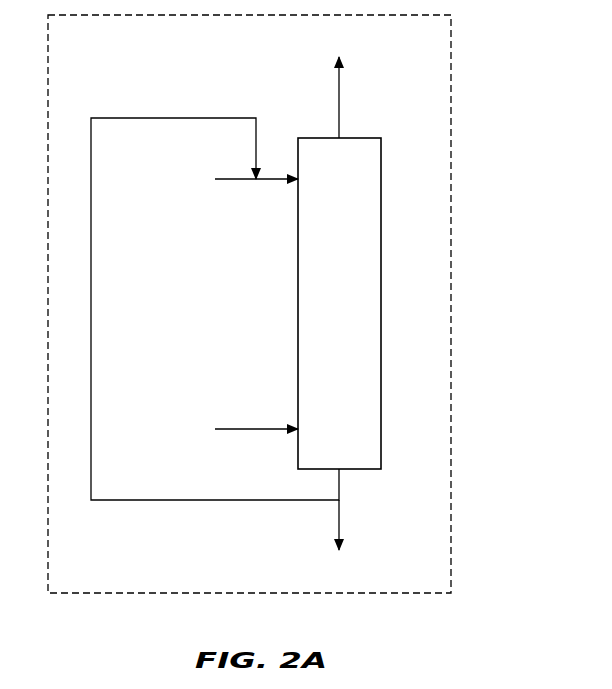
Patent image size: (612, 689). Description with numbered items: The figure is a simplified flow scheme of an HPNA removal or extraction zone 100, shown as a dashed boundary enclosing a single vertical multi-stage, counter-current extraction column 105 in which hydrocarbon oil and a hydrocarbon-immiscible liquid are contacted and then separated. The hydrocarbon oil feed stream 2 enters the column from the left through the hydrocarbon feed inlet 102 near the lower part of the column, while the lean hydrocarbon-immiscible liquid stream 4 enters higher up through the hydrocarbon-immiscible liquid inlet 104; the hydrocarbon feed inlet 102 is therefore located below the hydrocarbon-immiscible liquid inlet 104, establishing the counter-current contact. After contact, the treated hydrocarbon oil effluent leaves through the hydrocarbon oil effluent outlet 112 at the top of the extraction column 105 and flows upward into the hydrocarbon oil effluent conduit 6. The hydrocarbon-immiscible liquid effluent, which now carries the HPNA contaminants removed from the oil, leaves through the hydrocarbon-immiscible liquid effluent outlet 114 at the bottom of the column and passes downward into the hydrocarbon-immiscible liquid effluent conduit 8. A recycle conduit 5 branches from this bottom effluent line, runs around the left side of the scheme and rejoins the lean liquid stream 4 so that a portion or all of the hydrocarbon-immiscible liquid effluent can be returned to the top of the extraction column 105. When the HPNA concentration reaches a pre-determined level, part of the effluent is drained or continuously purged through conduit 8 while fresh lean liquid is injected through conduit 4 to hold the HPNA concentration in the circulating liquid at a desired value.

The HPNA removal or extraction zone 100 is at (275, 297).
The extraction column 105 is at (339, 303).
The conduit 5 is at (204, 309).
The lean hydrocarbon-immiscible liquid stream 4 is at (246, 181).
The hydrocarbon-immiscible liquid inlet 104 is at (293, 182).
The hydrocarbon oil feed stream 2 is at (246, 431).
The hydrocarbon feed inlet 102 is at (291, 424).
The hydrocarbon oil effluent conduit 6 is at (339, 84).
The hydrocarbon oil effluent outlet 112 is at (341, 137).
The hydrocarbon-immiscible liquid effluent conduit 8 is at (339, 544).
The hydrocarbon-immiscible liquid effluent outlet 114 is at (341, 470).